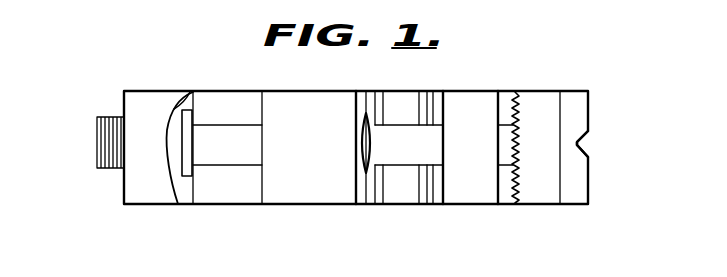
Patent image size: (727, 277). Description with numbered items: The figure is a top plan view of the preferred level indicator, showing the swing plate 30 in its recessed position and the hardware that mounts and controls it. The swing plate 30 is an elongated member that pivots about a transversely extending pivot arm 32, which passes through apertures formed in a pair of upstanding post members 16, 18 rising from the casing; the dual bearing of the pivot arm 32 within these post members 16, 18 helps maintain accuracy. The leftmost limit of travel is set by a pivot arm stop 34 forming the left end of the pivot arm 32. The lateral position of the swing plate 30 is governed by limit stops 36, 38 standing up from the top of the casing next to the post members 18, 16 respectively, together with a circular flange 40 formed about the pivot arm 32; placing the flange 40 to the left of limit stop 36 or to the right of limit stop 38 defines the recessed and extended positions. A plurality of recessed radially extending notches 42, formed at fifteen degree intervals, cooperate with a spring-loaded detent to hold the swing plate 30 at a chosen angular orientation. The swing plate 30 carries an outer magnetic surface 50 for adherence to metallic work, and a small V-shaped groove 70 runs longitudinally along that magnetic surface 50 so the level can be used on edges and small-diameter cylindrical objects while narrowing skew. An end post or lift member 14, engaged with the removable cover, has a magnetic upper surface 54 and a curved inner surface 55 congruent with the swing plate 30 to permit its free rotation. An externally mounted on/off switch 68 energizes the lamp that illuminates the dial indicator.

The end post 14 is at (125, 190).
The on/off switch 68 is at (97, 157).
The upper surface 54 is at (148, 191).
The curved inner surface 55 is at (190, 92).
The pivot arm stop 34 is at (189, 178).
The pivot arm 32 is at (222, 157).
The post member 18 is at (306, 190).
The flange 40 is at (371, 177).
The limit stop 36 is at (374, 93).
The limit stop 38 is at (428, 93).
The post member 16 is at (462, 192).
The notches 42 is at (518, 192).
The swing plate 30 is at (543, 192).
The outer magnetic surface 50 is at (577, 107).
The V-shaped groove 70 is at (580, 147).